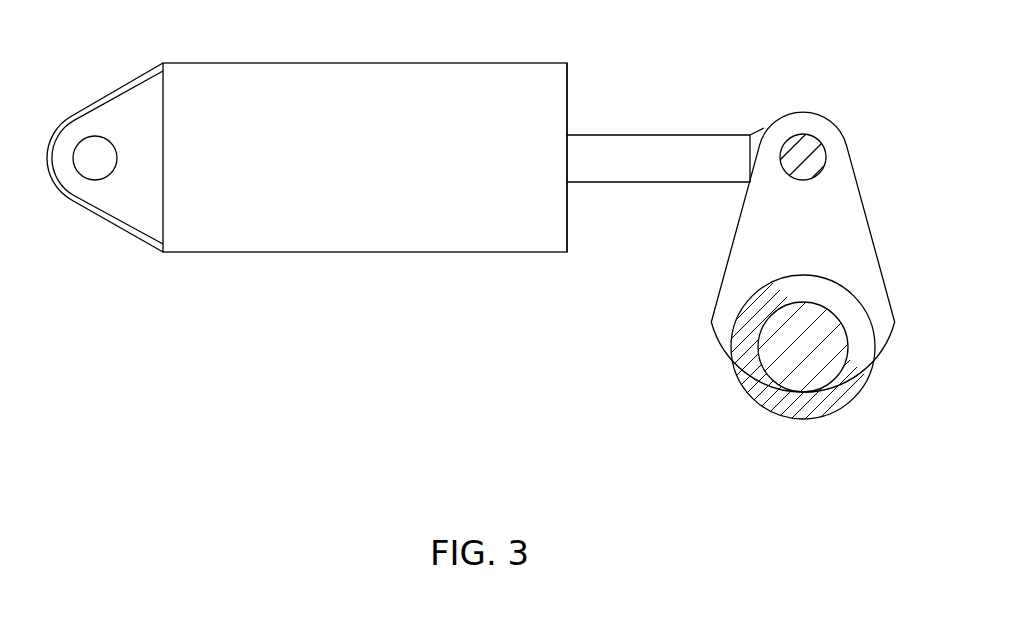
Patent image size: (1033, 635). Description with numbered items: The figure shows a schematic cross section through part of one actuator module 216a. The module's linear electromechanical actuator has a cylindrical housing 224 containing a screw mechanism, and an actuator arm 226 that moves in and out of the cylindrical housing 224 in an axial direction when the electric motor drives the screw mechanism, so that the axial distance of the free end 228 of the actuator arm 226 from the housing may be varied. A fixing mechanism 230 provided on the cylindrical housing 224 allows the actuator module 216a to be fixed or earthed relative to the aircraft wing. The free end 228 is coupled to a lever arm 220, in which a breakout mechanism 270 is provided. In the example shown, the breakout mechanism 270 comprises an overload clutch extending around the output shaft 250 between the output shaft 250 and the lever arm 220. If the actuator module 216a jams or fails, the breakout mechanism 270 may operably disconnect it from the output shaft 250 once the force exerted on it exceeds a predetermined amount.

The actuator module 216a is at (345, 252).
The fixing mechanism 230 is at (82, 110).
The cylindrical housing 224 is at (567, 80).
The actuator arm 226 is at (672, 135).
The lever arm 220 is at (863, 203).
The free end 228 is at (818, 112).
The breakout mechanism 270 is at (732, 350).
The output shaft 250 is at (787, 380).